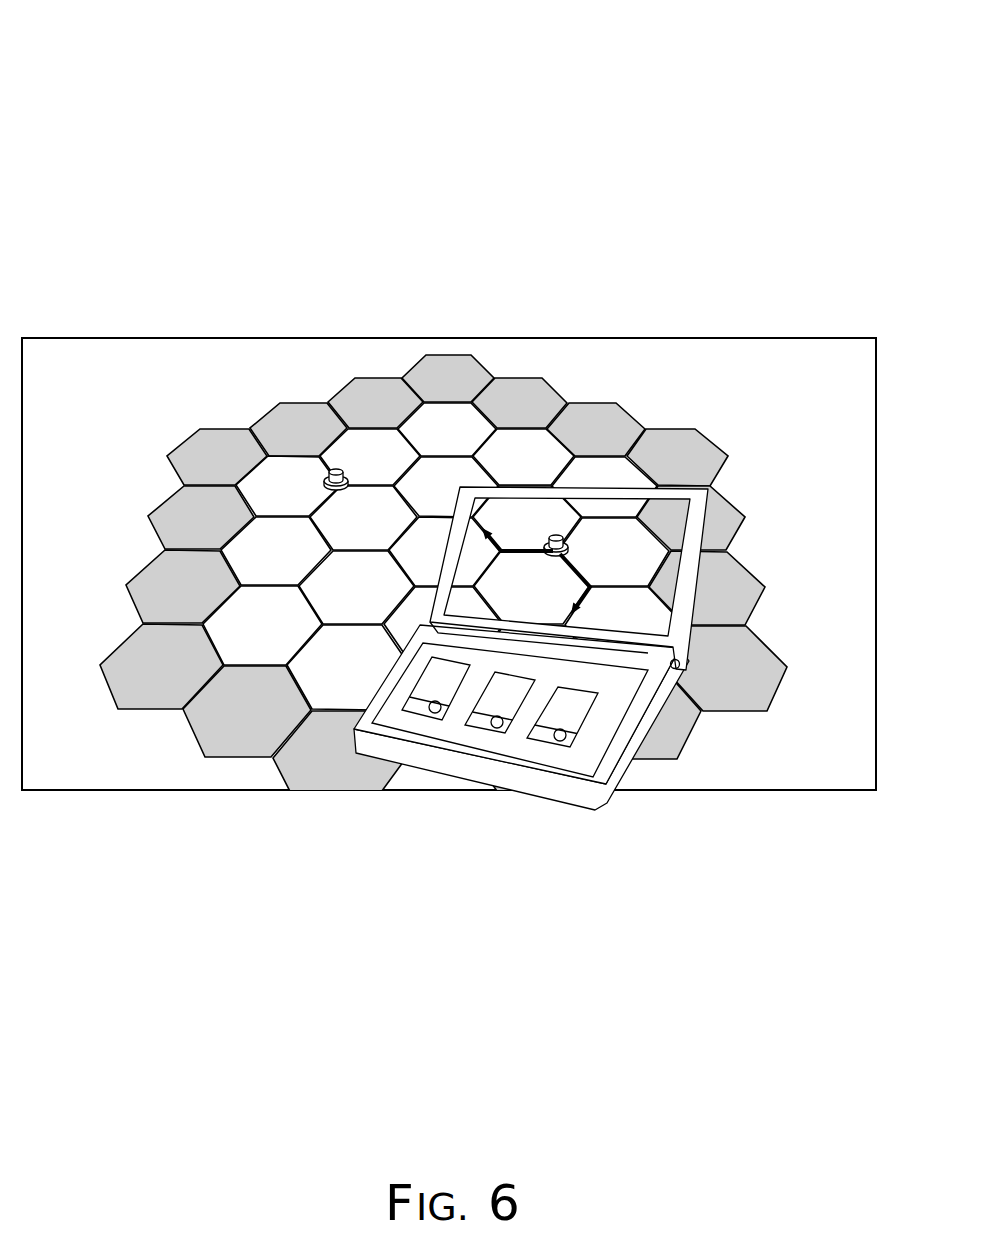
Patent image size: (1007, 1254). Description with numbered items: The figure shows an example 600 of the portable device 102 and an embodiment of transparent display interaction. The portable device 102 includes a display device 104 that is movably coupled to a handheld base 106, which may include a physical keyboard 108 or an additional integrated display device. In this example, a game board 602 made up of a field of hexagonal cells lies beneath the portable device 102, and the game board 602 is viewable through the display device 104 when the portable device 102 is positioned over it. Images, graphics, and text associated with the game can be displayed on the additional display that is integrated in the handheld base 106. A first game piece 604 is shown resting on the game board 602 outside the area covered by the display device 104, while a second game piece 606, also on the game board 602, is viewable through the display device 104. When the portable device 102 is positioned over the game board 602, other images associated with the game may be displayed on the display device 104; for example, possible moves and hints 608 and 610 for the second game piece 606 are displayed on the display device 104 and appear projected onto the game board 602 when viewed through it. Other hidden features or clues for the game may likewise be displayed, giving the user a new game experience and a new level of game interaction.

The example 600 is at (714, 58).
The game board 602 is at (561, 338).
The first game piece 604 is at (344, 470).
The second game piece 606 is at (560, 528).
The possible moves and hints 608 is at (533, 521).
The possible moves and hints 610 is at (628, 544).
The portable device 102 is at (636, 779).
The display device 104 is at (677, 486).
The handheld base 106 is at (558, 793).
The physical keyboard 108 is at (508, 750).